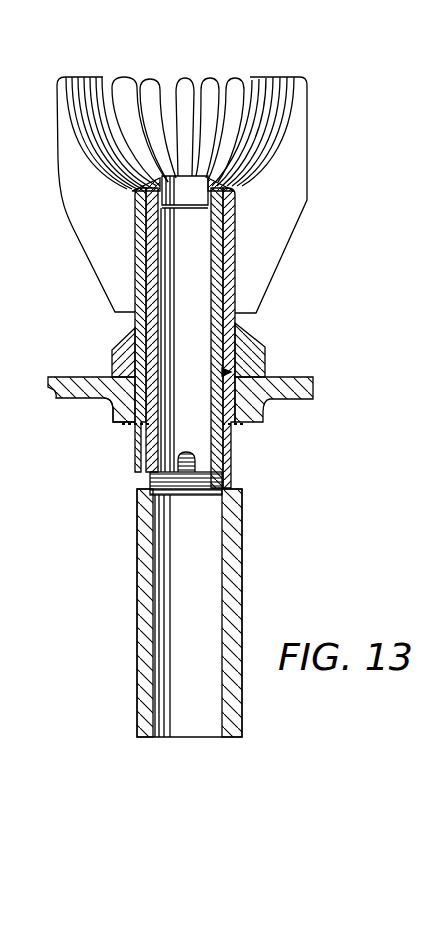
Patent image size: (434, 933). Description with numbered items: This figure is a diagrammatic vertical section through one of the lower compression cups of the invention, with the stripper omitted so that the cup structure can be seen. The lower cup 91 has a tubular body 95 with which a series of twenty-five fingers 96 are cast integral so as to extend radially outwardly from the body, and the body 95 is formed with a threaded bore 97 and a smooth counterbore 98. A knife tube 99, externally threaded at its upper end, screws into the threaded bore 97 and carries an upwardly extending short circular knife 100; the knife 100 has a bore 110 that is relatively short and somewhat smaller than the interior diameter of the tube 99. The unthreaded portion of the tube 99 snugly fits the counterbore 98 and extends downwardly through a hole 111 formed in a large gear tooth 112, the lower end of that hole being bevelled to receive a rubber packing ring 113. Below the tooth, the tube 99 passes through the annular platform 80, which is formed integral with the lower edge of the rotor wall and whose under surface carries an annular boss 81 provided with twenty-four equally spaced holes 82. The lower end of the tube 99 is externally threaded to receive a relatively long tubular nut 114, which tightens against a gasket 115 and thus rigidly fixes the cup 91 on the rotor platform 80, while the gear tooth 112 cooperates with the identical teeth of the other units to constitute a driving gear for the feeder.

The lower cup 91 is at (322, 141).
The fingers 96 is at (98, 106).
The circular knife 100 is at (207, 174).
The bore 110 is at (207, 190).
The threaded bore 97 is at (152, 228).
The counterbore 98 is at (150, 277).
The tubular body 95 is at (230, 234).
The knife tube 99 is at (223, 277).
The hole 111 is at (237, 329).
The gear tooth 112 is at (265, 356).
The rubber packing ring 113 is at (222, 372).
The annular platform 80 is at (67, 398).
The annular boss 81 is at (121, 416).
The holes 82 is at (232, 402).
The gasket 115 is at (237, 428).
The tubular nut 114 is at (236, 523).